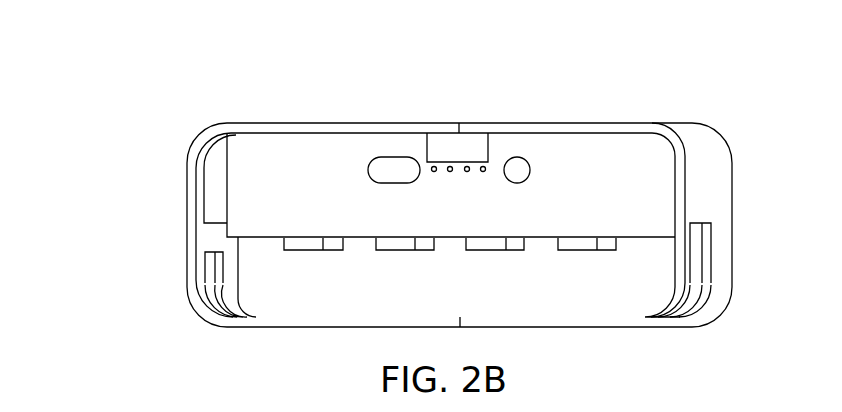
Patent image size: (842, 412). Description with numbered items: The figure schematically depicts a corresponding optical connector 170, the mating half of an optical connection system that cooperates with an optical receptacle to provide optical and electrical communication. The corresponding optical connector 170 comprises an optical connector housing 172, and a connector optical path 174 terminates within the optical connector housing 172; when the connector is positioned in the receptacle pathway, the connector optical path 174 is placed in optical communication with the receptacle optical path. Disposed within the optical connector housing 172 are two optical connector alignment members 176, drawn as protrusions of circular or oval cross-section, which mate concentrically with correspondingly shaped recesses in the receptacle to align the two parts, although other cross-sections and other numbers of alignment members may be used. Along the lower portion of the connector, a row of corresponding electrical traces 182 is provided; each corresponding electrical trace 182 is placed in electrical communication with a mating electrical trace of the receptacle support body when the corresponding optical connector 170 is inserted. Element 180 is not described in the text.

The corresponding optical connector 170 is at (135, 118).
The optical connector housing 172 is at (665, 142).
The connector optical path 174 is at (467, 174).
The optical connector alignment member 176 is at (368, 170).
The housing body 180 is at (235, 203).
The corresponding electrical trace 182 is at (488, 251).